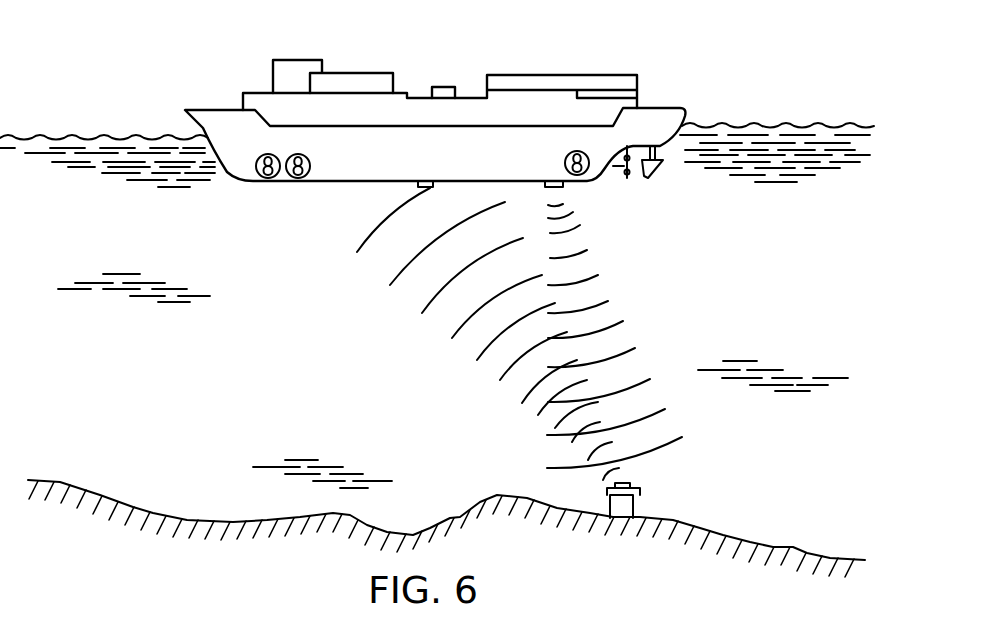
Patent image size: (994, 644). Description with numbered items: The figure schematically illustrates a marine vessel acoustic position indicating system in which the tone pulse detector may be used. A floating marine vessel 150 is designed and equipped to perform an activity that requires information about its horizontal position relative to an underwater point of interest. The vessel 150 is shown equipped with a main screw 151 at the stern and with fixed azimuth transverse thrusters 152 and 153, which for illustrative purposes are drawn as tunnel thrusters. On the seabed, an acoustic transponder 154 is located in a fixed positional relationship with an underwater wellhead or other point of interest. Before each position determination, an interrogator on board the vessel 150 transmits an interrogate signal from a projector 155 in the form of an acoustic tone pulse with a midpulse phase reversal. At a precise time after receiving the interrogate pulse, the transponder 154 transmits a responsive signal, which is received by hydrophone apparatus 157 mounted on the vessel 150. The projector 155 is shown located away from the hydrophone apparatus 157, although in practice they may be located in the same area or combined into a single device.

The floating marine vessel 150 is at (203, 112).
The main screw 151 is at (627, 178).
The fixed azimuth transverse thruster 152 is at (310, 174).
The fixed azimuth transverse thruster 153 is at (588, 158).
The acoustic transponder 154 is at (635, 487).
The projector 155 is at (562, 188).
The hydrophone apparatus 157 is at (425, 188).